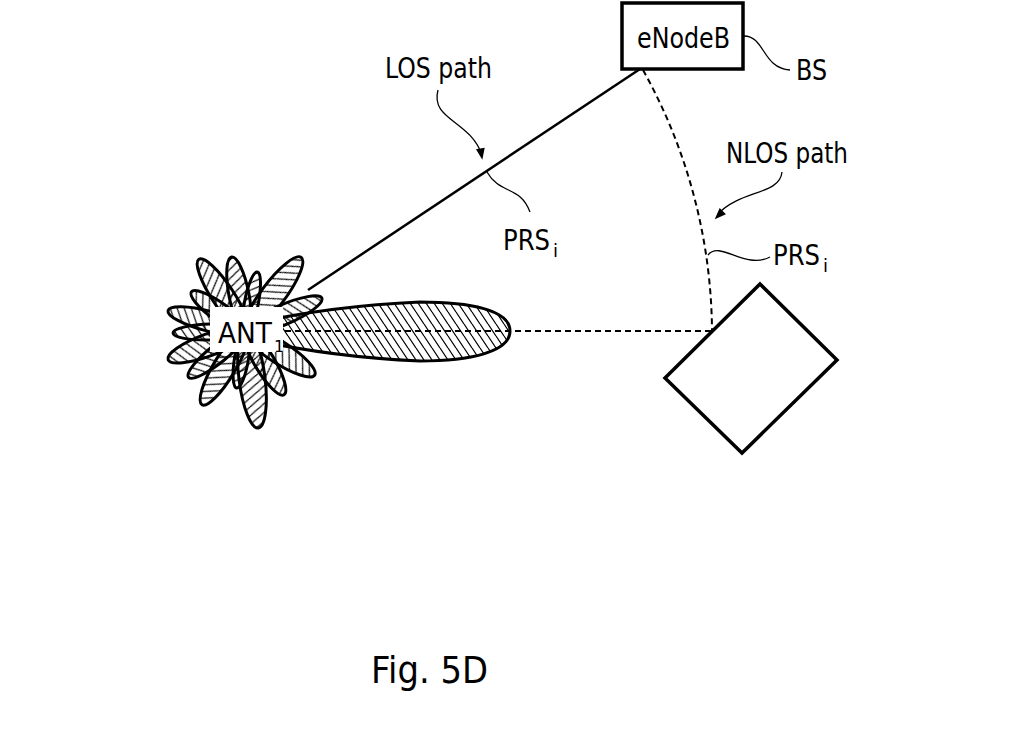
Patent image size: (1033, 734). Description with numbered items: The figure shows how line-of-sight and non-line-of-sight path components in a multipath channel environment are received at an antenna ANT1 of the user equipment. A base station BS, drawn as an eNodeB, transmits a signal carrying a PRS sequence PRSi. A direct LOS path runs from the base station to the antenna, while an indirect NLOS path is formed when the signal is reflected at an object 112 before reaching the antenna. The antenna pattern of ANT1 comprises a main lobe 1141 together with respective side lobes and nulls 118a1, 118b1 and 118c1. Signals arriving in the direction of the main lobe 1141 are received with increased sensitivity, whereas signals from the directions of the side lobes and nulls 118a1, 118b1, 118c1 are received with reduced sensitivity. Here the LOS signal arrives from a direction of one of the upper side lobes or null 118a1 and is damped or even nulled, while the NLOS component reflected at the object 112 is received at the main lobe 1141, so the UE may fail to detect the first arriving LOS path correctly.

The upper side lobes or null 118a1 is at (183, 280).
The side lobes and nulls 118b1 is at (275, 440).
The side lobes and nulls 118c1 is at (168, 332).
The main lobe 1141 is at (433, 368).
The object 112 is at (794, 405).